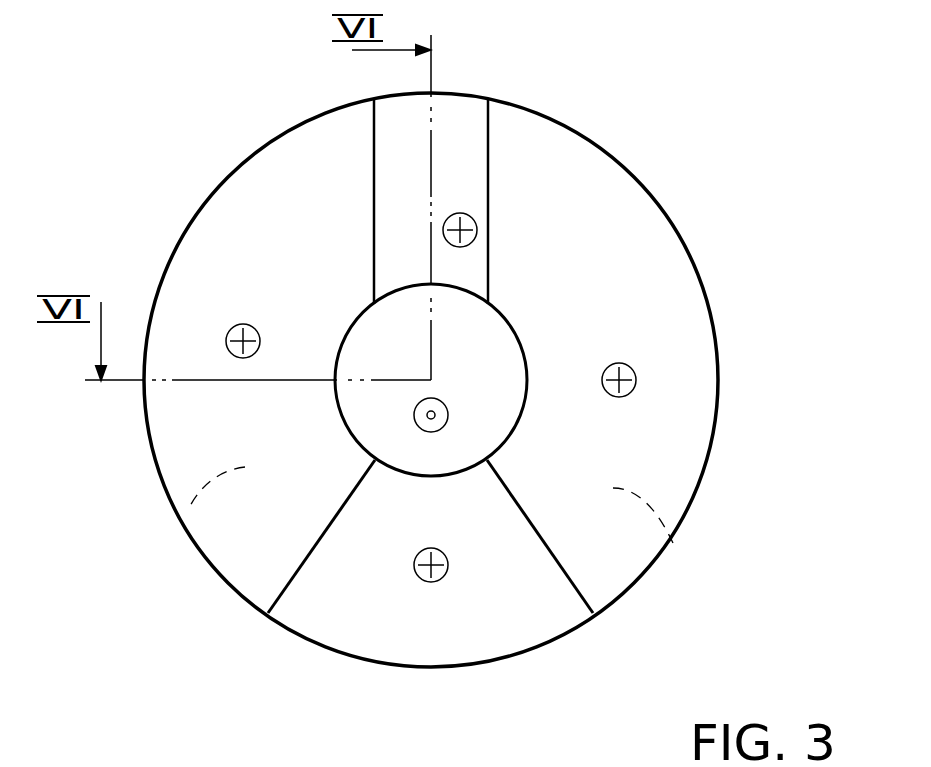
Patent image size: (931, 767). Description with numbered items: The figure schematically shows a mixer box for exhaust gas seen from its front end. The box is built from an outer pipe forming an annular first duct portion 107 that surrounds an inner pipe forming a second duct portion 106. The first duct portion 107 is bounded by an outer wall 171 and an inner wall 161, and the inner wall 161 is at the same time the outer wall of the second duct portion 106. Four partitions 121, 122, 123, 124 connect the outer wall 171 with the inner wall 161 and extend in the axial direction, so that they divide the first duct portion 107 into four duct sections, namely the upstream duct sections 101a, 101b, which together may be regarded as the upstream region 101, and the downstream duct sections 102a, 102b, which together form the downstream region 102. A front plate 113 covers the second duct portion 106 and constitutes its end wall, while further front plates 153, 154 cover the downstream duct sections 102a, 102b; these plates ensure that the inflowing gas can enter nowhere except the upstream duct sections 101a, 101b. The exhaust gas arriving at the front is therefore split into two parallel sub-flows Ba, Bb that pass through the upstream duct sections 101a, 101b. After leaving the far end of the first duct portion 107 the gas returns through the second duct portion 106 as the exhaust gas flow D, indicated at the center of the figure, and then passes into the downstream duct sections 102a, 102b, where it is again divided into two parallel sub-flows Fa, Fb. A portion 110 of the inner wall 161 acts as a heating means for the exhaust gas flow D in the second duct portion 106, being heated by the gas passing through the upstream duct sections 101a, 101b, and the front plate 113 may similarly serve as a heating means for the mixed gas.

The first duct portion 101 is at (472, 88).
The upstream duct section 101a is at (460, 157).
The upstream duct section 101b is at (492, 615).
The cut-out portion 102 is at (150, 553).
The downstream duct section 102a is at (174, 524).
The downstream duct section 102b is at (683, 548).
The second duct portion 106 is at (320, 316).
The first duct portion 107 is at (195, 156).
The portion of the inner wall 110 is at (410, 286).
The front plate 113 is at (480, 347).
The partition 121 is at (374, 189).
The partition 122 is at (490, 243).
The partition 123 is at (548, 548).
The partition 124 is at (313, 548).
The front plate 153 is at (182, 413).
The front plate 154 is at (643, 270).
The inner wall 161 is at (350, 426).
The outer wall 171 is at (158, 470).
The sub-flow Fa is at (232, 332).
The sub-flow Fb is at (637, 378).
The sub-flow Ba is at (475, 217).
The sub-flow Bb is at (417, 579).
The exhaust gas flow D is at (448, 417).